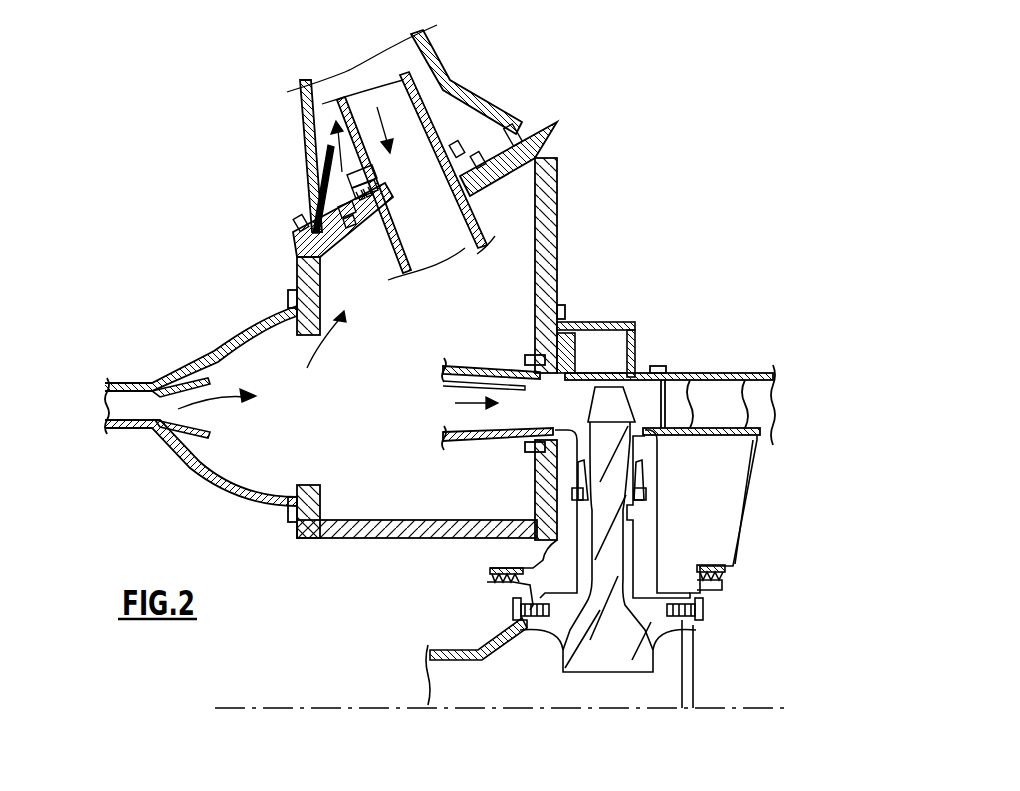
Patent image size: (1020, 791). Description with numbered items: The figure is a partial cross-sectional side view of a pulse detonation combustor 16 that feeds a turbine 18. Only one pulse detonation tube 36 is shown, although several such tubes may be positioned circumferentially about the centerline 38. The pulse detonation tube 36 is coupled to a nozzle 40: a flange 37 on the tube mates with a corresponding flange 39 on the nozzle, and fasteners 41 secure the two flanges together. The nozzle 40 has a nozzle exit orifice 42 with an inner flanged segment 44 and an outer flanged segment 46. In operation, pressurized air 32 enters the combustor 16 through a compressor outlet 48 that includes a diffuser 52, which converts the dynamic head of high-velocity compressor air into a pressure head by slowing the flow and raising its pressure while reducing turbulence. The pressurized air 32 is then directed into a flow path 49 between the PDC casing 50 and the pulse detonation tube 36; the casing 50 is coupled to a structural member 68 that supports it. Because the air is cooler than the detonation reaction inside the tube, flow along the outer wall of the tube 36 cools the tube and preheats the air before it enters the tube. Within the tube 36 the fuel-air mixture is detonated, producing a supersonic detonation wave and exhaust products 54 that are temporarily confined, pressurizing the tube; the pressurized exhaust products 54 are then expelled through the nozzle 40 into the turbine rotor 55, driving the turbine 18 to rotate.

The pulse detonation combustor 16 is at (592, 148).
The turbine 18 is at (665, 322).
The pressurized air 32 is at (232, 410).
The pulse detonation tube 36 is at (435, 103).
The flange 37 is at (347, 187).
The centerline 38 is at (740, 708).
The flange 39 is at (350, 213).
The nozzle 40 is at (476, 232).
The fasteners 41 is at (370, 152).
The nozzle exit orifice 42 is at (521, 405).
The inner flanged segment 44 is at (541, 436).
The outer flanged segment 46 is at (567, 345).
The compressor outlet 48 is at (120, 400).
The flow path 49 is at (330, 118).
The PDC casing 50 is at (313, 183).
The diffuser 52 is at (200, 371).
The exhaust products 54 is at (383, 118).
The turbine rotor 55 is at (610, 406).
The structural member 68 is at (542, 125).